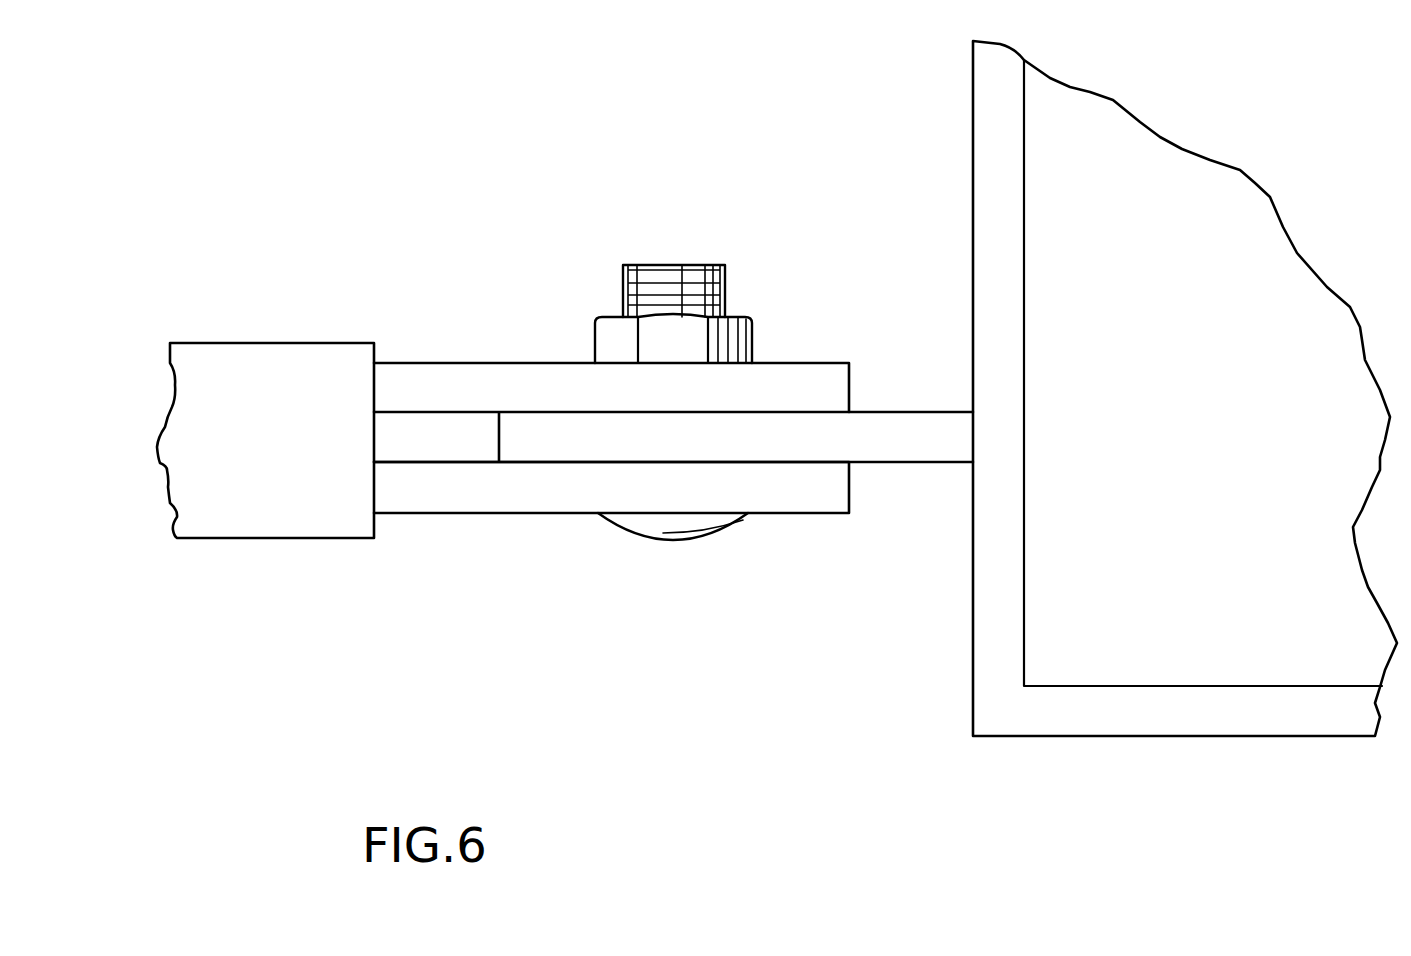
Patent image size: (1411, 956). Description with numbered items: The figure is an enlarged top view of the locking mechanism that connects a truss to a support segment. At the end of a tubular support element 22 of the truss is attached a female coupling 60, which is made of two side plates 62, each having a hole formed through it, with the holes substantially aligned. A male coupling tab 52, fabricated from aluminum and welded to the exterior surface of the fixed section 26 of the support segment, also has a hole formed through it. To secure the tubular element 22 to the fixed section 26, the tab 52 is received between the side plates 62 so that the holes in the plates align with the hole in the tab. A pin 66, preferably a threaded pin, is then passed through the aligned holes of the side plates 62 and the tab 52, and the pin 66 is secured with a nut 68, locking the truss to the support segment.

The tubular support element 22 is at (273, 515).
The fixed section 26 is at (997, 326).
The male coupling tab 52 is at (877, 441).
The female coupling 60 is at (611, 457).
The side plate 62 is at (442, 387).
The pin 66 is at (657, 525).
The nut 68 is at (720, 345).